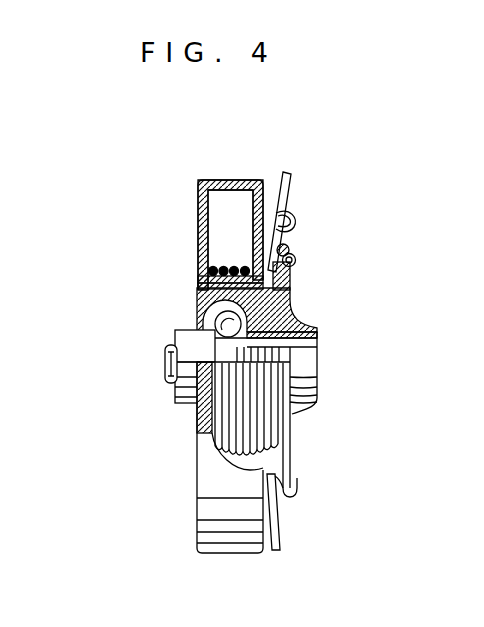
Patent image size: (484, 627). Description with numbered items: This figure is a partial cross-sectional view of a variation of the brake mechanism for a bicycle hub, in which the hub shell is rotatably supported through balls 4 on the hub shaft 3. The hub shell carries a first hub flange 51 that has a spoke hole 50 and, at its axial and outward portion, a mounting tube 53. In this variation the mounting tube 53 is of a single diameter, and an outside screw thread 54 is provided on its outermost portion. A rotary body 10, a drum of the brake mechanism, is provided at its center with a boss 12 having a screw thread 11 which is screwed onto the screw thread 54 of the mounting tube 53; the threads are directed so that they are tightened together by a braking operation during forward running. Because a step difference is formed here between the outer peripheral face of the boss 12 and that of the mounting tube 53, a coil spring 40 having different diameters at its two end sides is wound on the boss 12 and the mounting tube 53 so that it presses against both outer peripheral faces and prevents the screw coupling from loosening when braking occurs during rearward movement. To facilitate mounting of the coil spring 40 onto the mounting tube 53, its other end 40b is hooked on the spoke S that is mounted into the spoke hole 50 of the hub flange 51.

The rotary body 10 is at (199, 184).
The coil spring 40 is at (211, 266).
The other end of the coil spring 40b is at (294, 223).
The boss 12 is at (201, 277).
The screw thread 11 is at (200, 284).
The outside screw thread 54 is at (213, 301).
The balls 4 is at (211, 333).
The spoke S is at (290, 183).
The spoke hole 50 is at (294, 263).
The first hub flange 51 is at (291, 283).
The mounting tube 53 is at (294, 313).
The hub shaft 3 is at (313, 360).